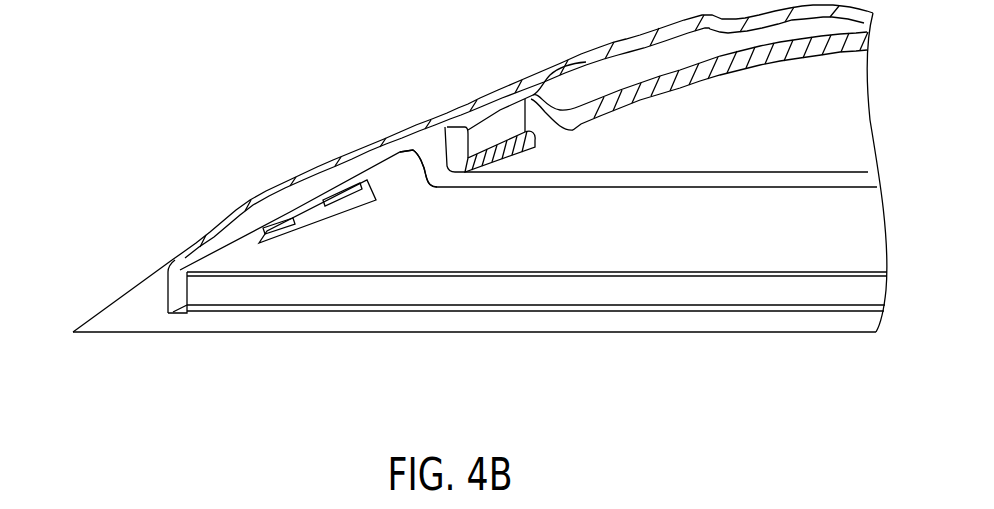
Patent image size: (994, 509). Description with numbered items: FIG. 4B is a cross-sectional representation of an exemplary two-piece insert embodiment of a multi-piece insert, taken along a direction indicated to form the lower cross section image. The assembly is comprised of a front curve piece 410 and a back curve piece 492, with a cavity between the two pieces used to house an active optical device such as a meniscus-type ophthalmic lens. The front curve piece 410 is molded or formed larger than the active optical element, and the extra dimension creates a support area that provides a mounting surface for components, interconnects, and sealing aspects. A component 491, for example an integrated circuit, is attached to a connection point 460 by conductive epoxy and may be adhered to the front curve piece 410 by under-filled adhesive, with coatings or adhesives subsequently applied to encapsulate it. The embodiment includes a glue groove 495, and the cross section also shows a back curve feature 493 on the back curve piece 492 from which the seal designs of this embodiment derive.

The front curve piece 410 is at (631, 60).
The connection point 460 is at (263, 219).
The component 491 is at (266, 258).
The back curve piece 492 is at (483, 150).
The back curve feature 493 is at (510, 129).
The glue groove 495 is at (436, 127).